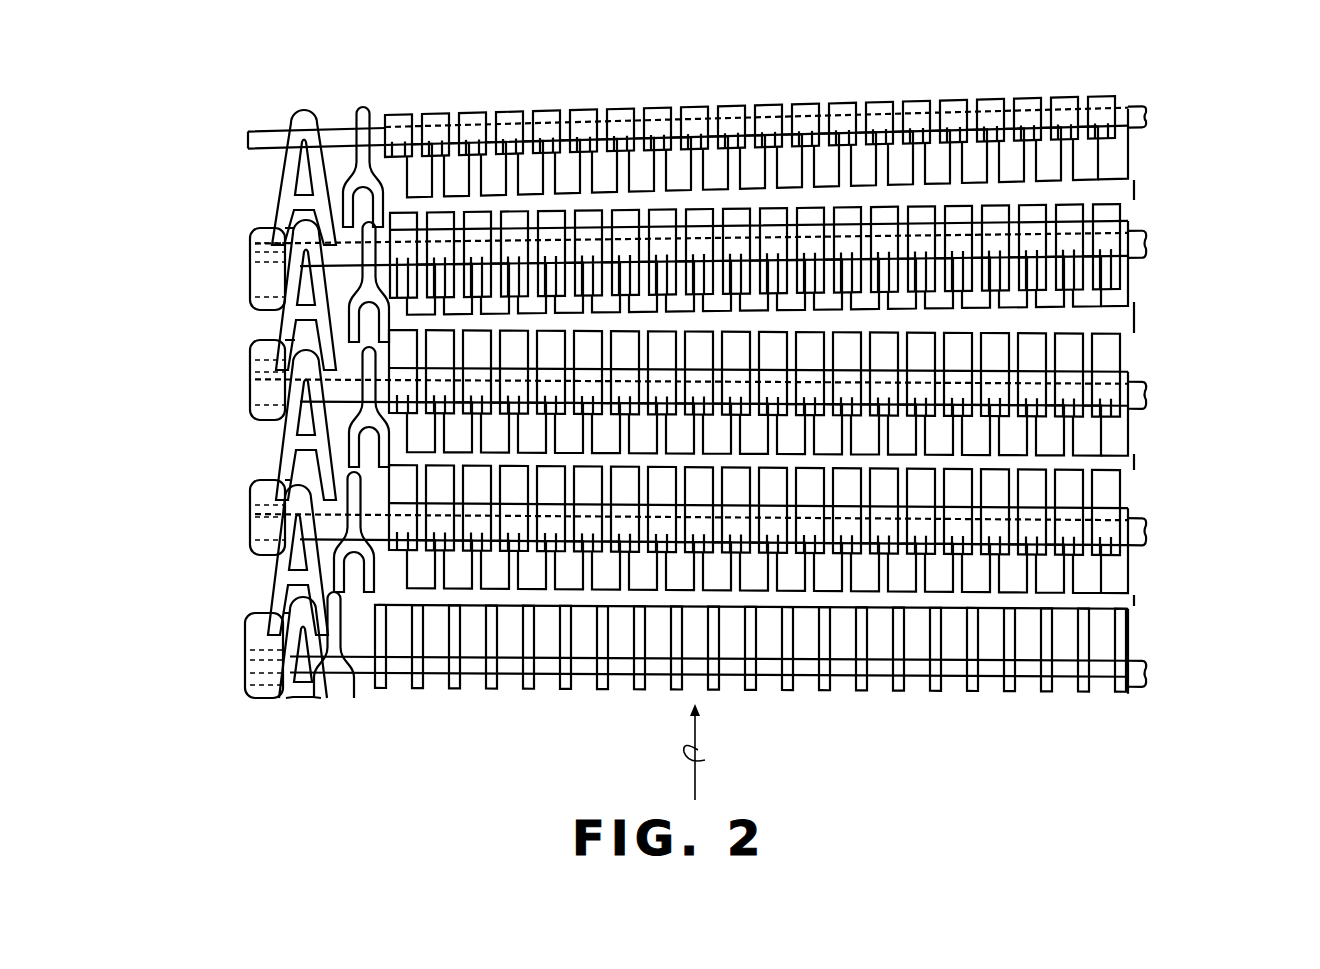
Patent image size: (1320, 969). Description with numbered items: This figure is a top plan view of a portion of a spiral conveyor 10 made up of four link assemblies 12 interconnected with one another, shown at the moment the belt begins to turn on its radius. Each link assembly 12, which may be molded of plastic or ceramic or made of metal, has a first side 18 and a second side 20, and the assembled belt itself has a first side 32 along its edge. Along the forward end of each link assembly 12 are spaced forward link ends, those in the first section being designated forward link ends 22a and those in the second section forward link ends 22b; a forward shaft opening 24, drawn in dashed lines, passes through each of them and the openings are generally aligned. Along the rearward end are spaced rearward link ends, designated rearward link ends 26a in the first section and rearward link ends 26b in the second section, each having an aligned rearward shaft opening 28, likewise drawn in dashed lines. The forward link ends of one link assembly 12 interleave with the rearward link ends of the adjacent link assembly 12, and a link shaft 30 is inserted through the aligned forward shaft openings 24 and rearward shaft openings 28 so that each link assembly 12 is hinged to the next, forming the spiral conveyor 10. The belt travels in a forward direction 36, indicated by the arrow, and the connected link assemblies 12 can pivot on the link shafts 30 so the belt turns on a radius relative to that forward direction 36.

The spiral conveyor 10 is at (1165, 350).
The link assembly 12 is at (1150, 151).
The first side 18 is at (243, 205).
The second side 20 is at (1150, 190).
The forward link ends in the first section 22a is at (364, 100).
The forward link ends in the second section 22b is at (548, 102).
The forward shaft opening 24 is at (730, 105).
The rearward link ends in the first section 26a is at (340, 320).
The rearward link ends in the second section 26b is at (1088, 292).
The rearward shaft opening 28 is at (1150, 258).
The link shaft 30 is at (333, 126).
The first side 32 is at (243, 497).
The forward direction 36 is at (700, 752).